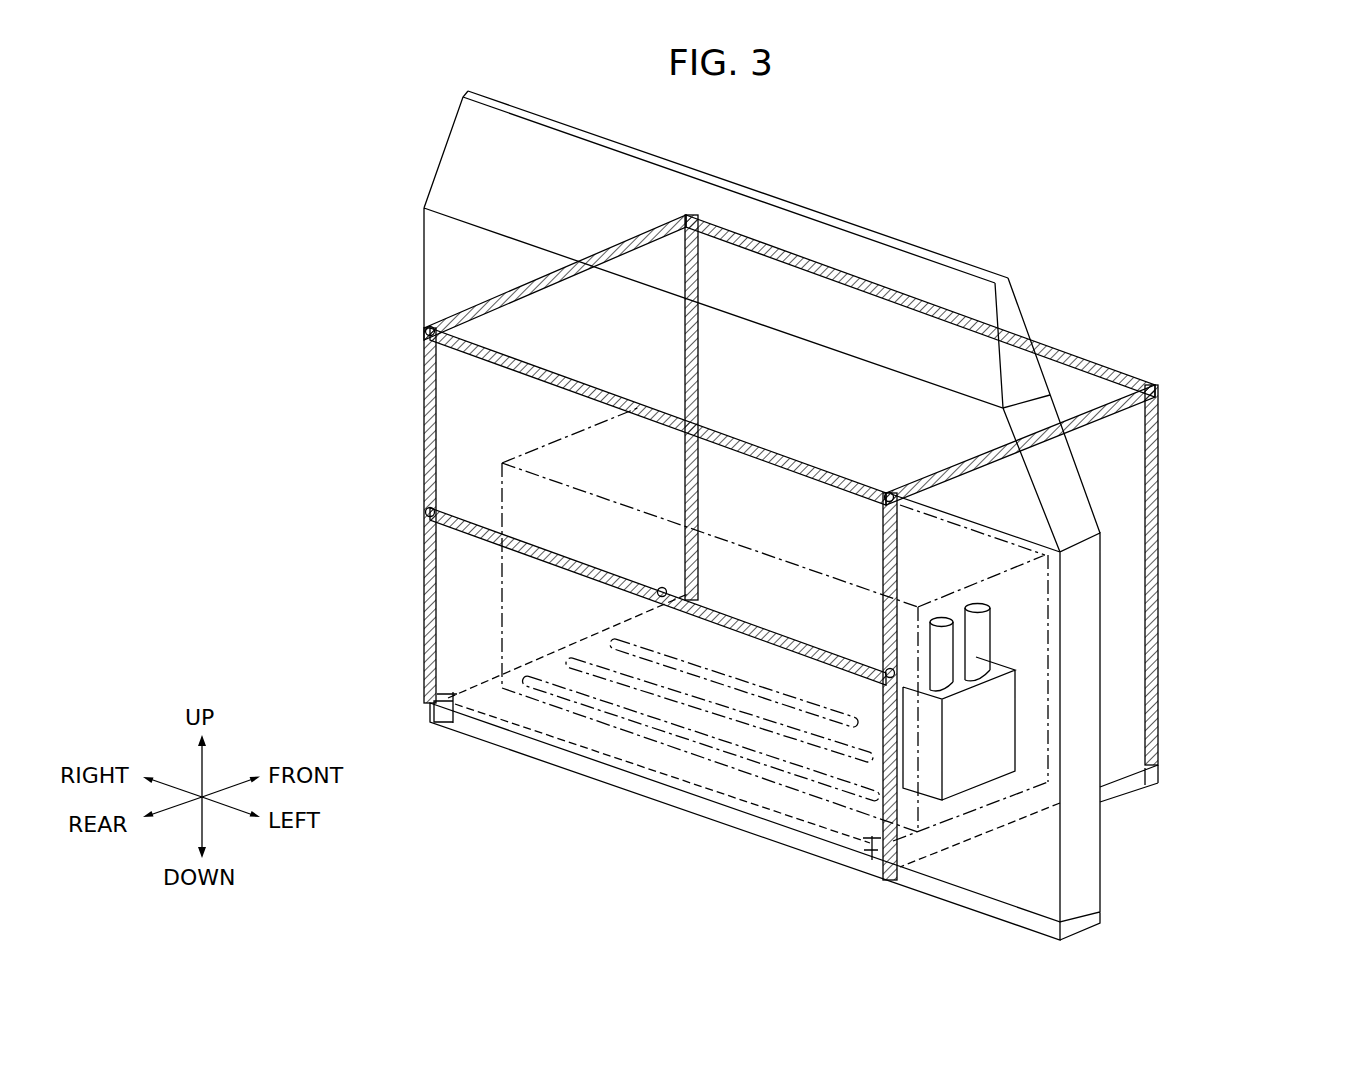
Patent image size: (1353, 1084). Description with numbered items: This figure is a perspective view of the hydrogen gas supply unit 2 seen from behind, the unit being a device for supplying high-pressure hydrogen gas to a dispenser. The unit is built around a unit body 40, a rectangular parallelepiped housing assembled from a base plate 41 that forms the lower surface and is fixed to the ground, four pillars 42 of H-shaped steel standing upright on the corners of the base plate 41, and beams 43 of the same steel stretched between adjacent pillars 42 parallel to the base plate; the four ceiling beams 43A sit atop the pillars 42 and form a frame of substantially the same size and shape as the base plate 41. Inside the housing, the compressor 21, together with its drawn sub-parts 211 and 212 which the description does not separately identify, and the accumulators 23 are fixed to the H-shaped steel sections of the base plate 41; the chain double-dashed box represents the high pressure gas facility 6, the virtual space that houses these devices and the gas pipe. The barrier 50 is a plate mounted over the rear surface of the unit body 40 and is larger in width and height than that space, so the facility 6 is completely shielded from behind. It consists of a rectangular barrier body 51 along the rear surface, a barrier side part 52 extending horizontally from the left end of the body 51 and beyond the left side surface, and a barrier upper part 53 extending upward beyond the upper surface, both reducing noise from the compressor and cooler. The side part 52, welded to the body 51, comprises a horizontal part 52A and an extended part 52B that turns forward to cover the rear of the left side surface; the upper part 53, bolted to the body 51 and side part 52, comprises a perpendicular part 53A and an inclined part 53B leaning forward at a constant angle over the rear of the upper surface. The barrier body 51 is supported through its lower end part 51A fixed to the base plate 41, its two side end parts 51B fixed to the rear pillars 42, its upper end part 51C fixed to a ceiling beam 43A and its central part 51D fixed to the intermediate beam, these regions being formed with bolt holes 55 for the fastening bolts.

The hydrogen gas supply unit 2 is at (1092, 238).
The high pressure gas facility 6 is at (540, 447).
The compressor 21 is at (1123, 702).
The heater body 211 is at (1013, 692).
The heater terminals 212 is at (992, 634).
The accumulators 23 is at (735, 692).
The unit body 40 is at (1170, 338).
The base plate 41 is at (794, 821).
The pillars 42 is at (777, 547).
The beams 43 is at (793, 322).
The ceiling beams 43A is at (793, 322).
The barrier 50 is at (739, 525).
The barrier body 51 is at (589, 595).
The lower end part 51A is at (734, 820).
The side end parts 51B is at (418, 557).
The upper end part 51C is at (730, 460).
The central part 51D is at (590, 558).
The barrier side part 52 is at (822, 726).
The horizontal part 52A is at (955, 873).
The extended part 52B is at (1085, 882).
The barrier upper part 53 is at (695, 321).
The perpendicular part 53A is at (455, 258).
The inclined part 53B is at (452, 158).
The bolt holes 55 is at (425, 333).